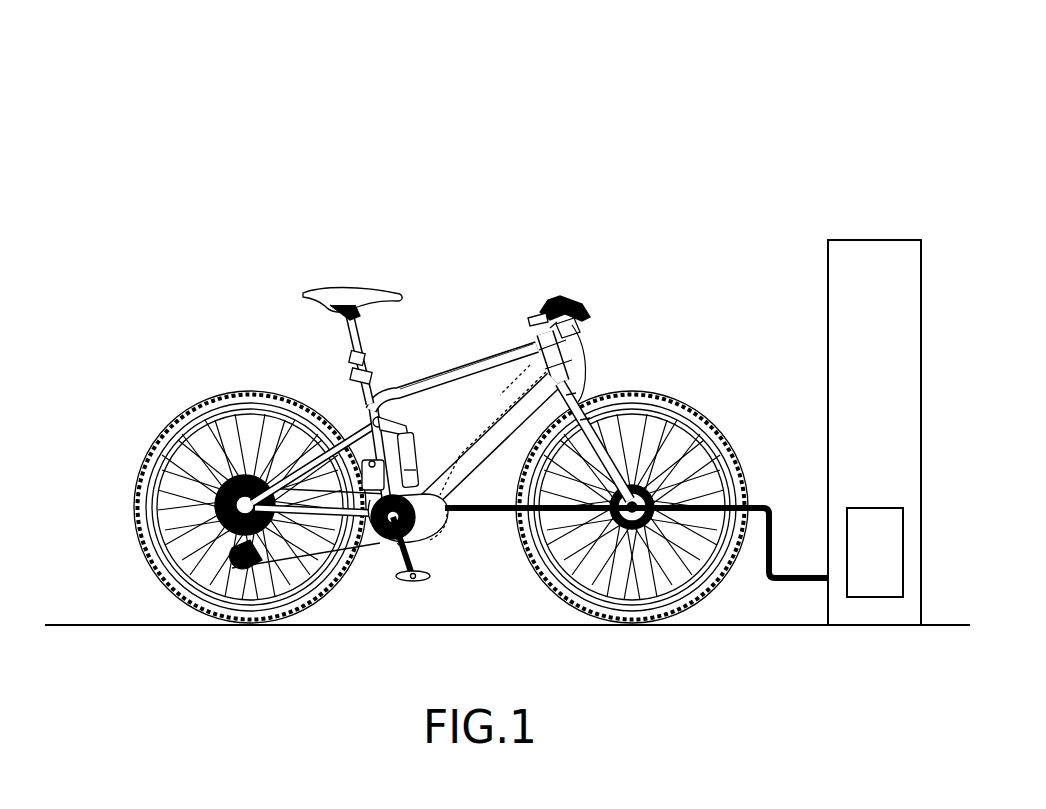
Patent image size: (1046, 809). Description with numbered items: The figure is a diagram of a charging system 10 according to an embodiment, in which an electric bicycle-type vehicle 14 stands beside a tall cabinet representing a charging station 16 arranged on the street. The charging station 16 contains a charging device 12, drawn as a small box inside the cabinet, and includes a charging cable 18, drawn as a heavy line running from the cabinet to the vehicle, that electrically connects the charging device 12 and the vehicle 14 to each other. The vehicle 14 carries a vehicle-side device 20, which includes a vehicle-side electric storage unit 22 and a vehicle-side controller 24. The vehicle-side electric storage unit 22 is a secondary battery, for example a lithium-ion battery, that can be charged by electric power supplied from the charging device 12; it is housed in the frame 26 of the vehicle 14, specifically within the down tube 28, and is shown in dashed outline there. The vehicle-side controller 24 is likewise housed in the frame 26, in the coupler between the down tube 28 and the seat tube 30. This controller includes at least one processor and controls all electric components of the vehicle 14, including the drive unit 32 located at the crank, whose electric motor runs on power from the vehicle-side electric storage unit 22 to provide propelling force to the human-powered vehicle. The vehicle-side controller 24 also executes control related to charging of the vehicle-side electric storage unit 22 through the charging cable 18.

The charging system 10 is at (499, 106).
The charging device 12 is at (875, 508).
The vehicle 14 is at (364, 270).
The charging station 16 is at (878, 240).
The charging cable 18 is at (770, 505).
The vehicle-side device 20 is at (457, 521).
The vehicle-side electric storage unit 22 is at (470, 470).
The vehicle-side controller 24 is at (441, 498).
The frame 26 is at (490, 344).
The down tube 28 is at (472, 408).
The seat tube 30 is at (362, 398).
The drive unit 32 is at (437, 535).